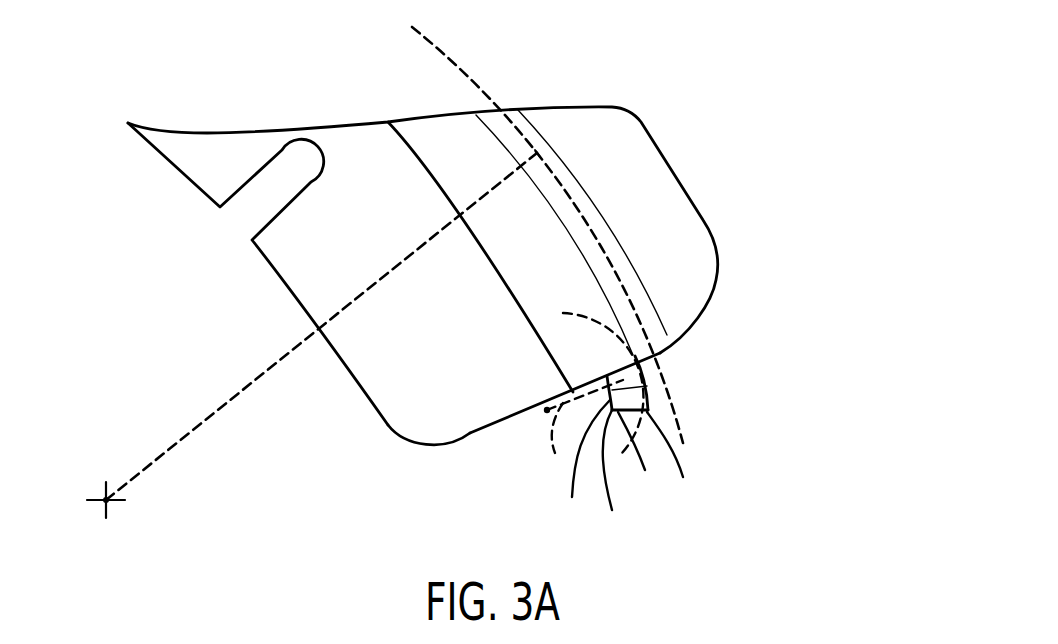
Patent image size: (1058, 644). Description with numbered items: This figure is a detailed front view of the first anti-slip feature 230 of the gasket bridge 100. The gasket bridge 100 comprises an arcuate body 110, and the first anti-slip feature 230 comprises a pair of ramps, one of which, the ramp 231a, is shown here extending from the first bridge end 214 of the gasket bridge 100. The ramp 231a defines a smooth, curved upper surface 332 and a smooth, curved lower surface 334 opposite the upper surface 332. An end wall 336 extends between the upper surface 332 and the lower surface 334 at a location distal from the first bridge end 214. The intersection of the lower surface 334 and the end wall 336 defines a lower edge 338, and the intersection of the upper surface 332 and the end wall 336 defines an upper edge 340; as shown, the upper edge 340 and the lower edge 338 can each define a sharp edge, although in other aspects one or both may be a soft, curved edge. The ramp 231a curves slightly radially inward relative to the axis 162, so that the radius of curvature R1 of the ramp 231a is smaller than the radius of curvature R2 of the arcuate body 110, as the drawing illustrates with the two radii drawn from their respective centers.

The gasket bridge 100 is at (852, 108).
The arcuate body 110 is at (573, 193).
The axis 162 is at (103, 503).
The first bridge end 214 is at (603, 378).
The first anti-slip feature 230 is at (706, 375).
The ramp 231a is at (670, 398).
The upper surface 332 is at (648, 372).
The lower surface 334 is at (583, 469).
The end wall 336 is at (637, 461).
The lower edge 338 is at (612, 481).
The upper edge 340 is at (672, 465).
The radius of curvature of the ramp R1 is at (590, 398).
The radius of curvature of the arcuate body R2 is at (252, 384).